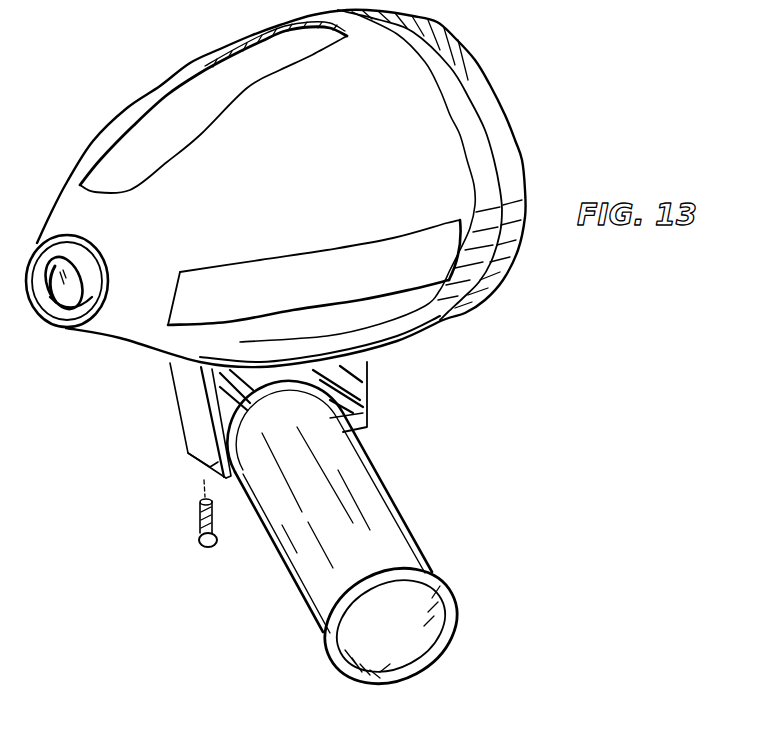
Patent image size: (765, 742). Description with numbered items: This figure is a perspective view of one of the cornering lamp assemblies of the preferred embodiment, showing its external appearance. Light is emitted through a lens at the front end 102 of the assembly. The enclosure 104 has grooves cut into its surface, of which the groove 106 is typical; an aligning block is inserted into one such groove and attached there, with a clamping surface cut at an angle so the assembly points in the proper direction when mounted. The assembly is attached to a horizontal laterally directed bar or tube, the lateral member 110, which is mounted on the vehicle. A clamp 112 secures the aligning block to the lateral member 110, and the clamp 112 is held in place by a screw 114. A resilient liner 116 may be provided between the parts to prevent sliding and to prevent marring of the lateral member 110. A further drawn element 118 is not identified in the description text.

The front end 102 is at (478, 74).
The enclosure 104 is at (379, 131).
The groove 106 is at (362, 281).
The lateral member 110 is at (382, 515).
The clamp 112 is at (197, 458).
The screw 114 is at (200, 533).
The resilient liner 116 is at (337, 393).
The mounting plate 118 is at (186, 408).